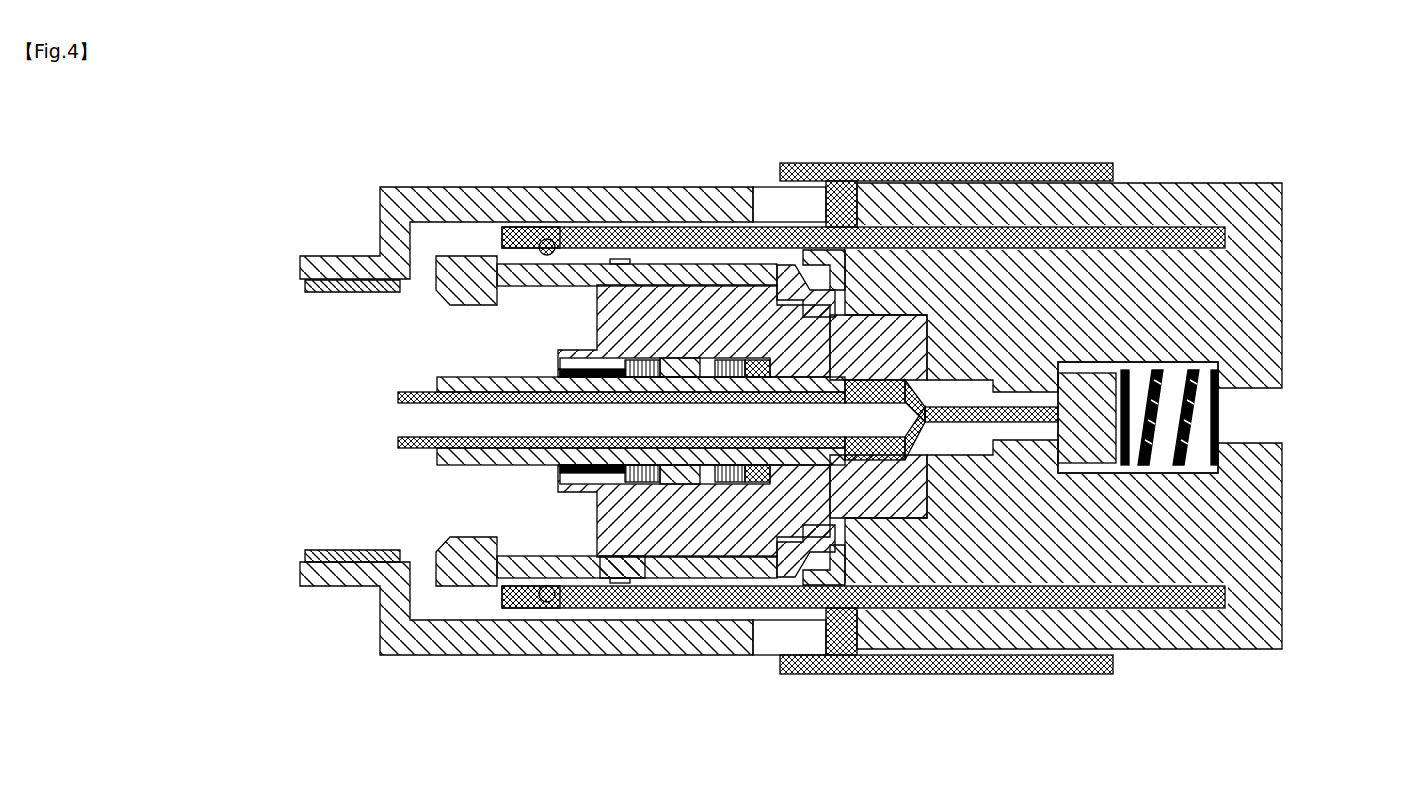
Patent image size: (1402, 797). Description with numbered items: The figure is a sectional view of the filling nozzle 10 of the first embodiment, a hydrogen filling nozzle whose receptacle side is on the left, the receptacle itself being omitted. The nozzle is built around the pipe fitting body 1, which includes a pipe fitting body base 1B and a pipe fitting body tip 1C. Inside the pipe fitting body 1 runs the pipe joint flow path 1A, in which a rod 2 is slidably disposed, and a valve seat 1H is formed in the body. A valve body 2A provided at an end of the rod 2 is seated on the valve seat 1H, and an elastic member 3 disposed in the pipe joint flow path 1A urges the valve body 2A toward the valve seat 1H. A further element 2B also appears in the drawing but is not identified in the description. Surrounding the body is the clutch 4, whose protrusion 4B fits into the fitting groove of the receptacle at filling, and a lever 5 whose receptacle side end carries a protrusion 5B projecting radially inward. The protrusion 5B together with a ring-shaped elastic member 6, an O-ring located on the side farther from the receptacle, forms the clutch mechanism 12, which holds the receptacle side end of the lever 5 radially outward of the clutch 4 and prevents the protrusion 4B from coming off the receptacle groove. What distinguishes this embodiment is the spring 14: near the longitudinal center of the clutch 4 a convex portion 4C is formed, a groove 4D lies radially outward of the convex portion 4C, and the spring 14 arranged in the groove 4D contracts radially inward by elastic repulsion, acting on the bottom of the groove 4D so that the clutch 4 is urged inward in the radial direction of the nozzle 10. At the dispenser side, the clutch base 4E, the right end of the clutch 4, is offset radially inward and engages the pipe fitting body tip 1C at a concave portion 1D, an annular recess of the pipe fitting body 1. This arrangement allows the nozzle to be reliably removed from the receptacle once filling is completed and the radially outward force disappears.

The pipe fitting body 1 is at (1254, 151).
The pipe joint flow path 1A is at (947, 442).
The pipe fitting body base 1B is at (1268, 215).
The pipe fitting body tip 1C is at (905, 312).
The concave portion 1D is at (855, 300).
The valve seat 1H is at (1088, 368).
The rod 2 is at (1090, 494).
The valve body 2A is at (1097, 375).
The cable 2B is at (512, 425).
The elastic member 3 is at (1190, 417).
The clutch 4 is at (680, 268).
The protrusion 4B is at (453, 263).
The convex portion 4C is at (632, 584).
The groove 4D is at (627, 580).
The clutch base 4E is at (800, 295).
The lever 5 is at (1132, 230).
The protrusion 5B is at (487, 238).
The ring-shaped elastic member 6 is at (552, 241).
The filling nozzle 10 is at (380, 139).
The clutch mechanism 12 is at (737, 142).
The spring 14 is at (620, 259).